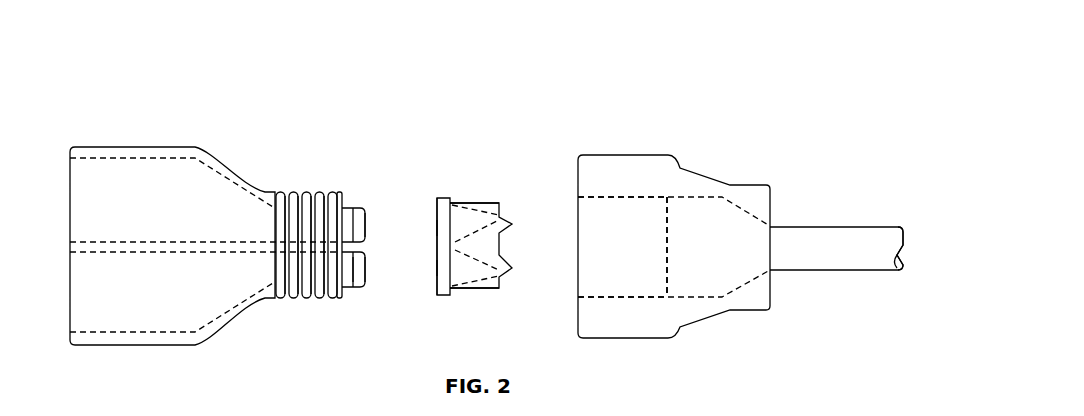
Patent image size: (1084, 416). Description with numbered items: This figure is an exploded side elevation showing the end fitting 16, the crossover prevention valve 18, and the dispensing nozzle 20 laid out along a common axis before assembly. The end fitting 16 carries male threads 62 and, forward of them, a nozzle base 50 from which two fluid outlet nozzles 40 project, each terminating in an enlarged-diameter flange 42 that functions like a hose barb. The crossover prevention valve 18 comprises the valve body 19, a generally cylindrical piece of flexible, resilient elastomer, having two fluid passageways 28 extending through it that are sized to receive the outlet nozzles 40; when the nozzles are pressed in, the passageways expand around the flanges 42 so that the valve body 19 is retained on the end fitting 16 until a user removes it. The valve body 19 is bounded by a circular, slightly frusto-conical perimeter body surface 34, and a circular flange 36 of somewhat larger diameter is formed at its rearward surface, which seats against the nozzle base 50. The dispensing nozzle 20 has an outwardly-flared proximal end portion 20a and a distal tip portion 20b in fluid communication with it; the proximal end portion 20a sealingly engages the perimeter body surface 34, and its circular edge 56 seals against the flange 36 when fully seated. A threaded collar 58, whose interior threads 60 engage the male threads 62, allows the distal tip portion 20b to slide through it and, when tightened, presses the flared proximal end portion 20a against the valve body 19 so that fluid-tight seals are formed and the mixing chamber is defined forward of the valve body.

The end fitting 16 is at (196, 146).
The male threads 62 is at (300, 186).
The fluid outlet nozzles 40 is at (352, 208).
The enlarged-diameter flange 42 is at (365, 207).
The nozzle base 50 is at (359, 265).
The insert 18 is at (463, 150).
The circular flange 36 is at (450, 200).
The valve body 19 is at (461, 203).
The fluid passageways 28 is at (433, 225).
The perimeter body surface 34 is at (461, 289).
The threaded collar 58 is at (712, 180).
The circular edge 56 is at (660, 232).
The interior threads 60 is at (600, 206).
The outwardly-flared proximal end portion 20a is at (688, 283).
The dispensing nozzle 20 is at (831, 242).
The distal tip portion 20b is at (892, 206).